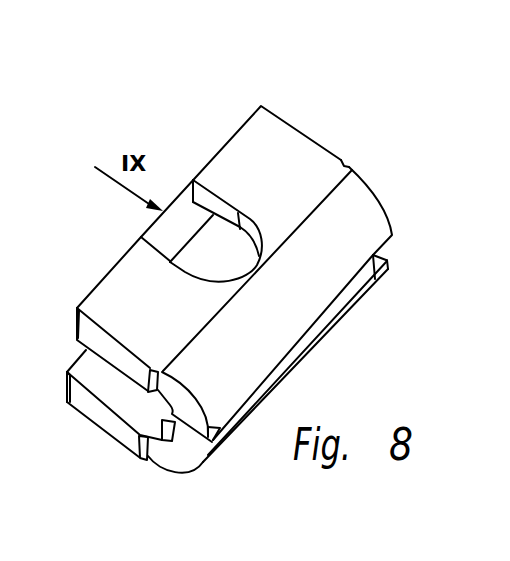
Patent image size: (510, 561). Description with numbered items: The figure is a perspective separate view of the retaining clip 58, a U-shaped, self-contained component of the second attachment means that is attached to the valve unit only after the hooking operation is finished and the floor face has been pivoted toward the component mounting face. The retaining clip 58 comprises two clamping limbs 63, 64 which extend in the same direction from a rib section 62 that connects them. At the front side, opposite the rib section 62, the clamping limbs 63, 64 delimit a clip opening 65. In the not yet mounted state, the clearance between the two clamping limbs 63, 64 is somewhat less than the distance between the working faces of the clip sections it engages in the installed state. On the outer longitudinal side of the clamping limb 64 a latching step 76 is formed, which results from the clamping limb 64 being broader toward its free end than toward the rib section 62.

The retaining clip 58 is at (337, 150).
The rib section 62 is at (293, 352).
The clamping limb 63 is at (101, 420).
The clamping limb 64 is at (275, 132).
The clip opening 65 is at (79, 359).
The latching step 76 is at (350, 168).